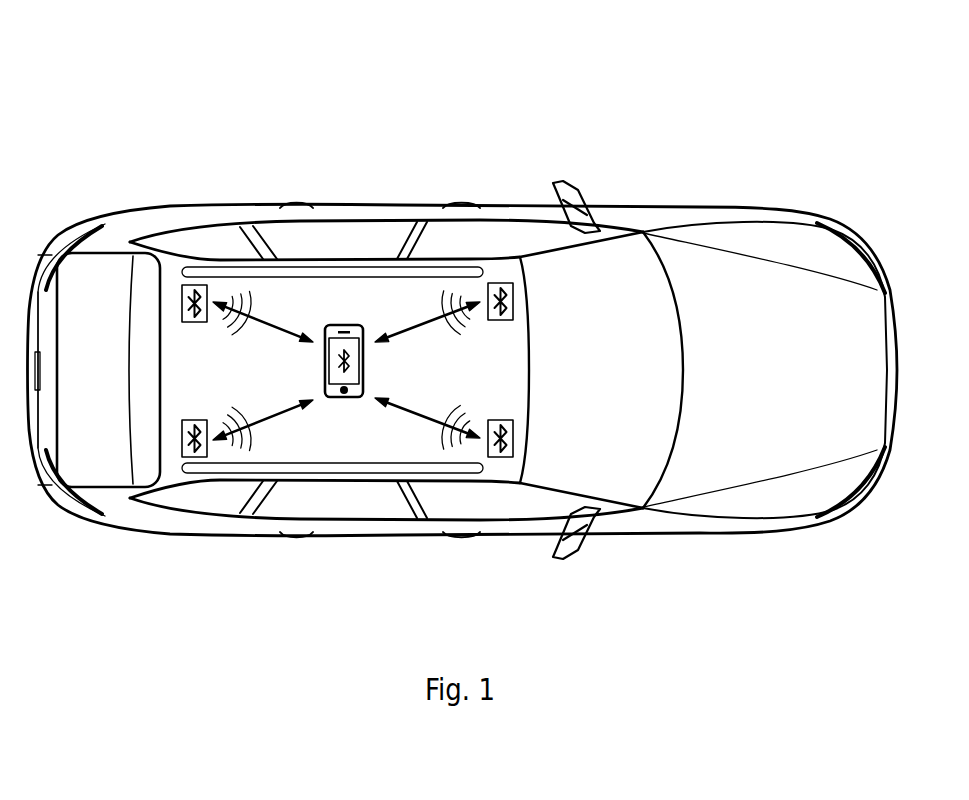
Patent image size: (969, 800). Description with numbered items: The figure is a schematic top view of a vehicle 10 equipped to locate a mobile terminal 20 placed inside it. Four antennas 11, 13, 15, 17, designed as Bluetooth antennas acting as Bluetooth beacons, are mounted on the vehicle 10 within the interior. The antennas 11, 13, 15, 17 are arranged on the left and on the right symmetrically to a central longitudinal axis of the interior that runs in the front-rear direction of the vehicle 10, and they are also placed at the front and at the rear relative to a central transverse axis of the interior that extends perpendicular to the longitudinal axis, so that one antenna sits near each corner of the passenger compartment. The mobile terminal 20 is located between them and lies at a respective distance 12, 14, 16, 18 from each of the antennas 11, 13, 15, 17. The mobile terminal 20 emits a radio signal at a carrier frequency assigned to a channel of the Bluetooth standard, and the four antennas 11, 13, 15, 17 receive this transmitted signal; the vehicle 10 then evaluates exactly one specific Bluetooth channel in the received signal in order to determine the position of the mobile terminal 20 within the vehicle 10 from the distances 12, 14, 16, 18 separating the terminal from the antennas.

The vehicle 10 is at (808, 150).
The antenna 11 is at (513, 301).
The distance 12 is at (432, 322).
The antenna 13 is at (513, 438).
The distance 14 is at (427, 419).
The antenna 15 is at (182, 439).
The distance 16 is at (262, 421).
The antenna 17 is at (182, 299).
The distance 18 is at (264, 323).
The mobile terminal 20 is at (364, 366).